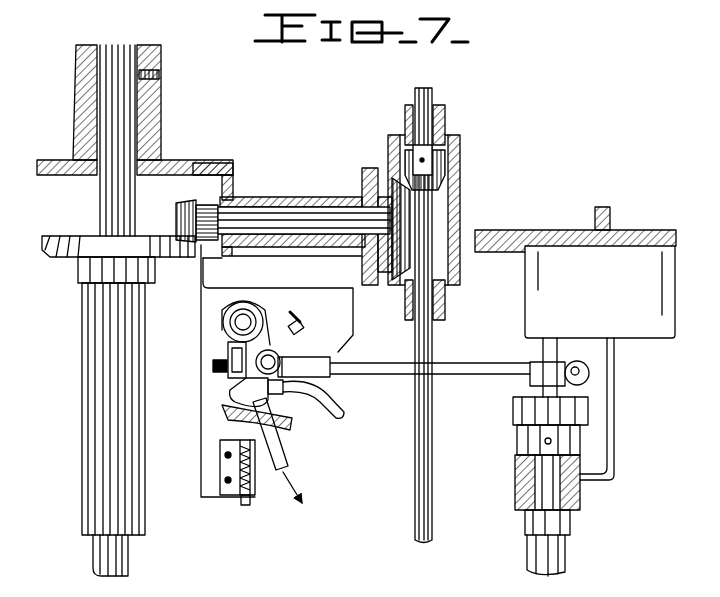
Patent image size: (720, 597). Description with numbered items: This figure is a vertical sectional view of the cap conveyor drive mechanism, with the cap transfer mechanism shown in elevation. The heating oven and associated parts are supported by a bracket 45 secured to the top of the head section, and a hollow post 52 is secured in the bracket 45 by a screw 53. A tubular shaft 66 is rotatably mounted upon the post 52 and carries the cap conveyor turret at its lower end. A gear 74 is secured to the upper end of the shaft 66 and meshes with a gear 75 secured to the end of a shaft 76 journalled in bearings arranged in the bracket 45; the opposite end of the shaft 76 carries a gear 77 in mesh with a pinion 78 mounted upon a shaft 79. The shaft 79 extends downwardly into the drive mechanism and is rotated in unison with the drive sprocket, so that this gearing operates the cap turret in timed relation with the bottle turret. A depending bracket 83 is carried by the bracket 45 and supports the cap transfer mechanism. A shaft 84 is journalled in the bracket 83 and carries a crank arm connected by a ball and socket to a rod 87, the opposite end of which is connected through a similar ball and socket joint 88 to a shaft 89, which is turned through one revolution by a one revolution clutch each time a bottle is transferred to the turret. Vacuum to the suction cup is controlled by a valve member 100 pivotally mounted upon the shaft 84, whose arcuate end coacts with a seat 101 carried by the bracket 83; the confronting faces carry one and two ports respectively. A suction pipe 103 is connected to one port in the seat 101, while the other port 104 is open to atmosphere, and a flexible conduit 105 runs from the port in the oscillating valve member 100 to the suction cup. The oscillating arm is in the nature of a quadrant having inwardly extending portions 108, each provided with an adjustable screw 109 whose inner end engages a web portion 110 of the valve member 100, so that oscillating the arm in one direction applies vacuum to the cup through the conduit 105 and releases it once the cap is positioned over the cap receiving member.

The bracket 45 is at (163, 130).
The hollow post 52 is at (97, 548).
The screw 53 is at (161, 75).
The tubular shaft 66 is at (97, 420).
The gear 74 is at (42, 250).
The gear 75 is at (188, 205).
The shaft 76 is at (282, 208).
The gear 77 is at (406, 245).
The pinion 78 is at (446, 178).
The shaft 79 is at (433, 100).
The depending bracket 83 is at (352, 312).
The shaft 84 is at (240, 322).
The rod 87 is at (468, 365).
The ball and socket joint 88 is at (590, 373).
The shaft 89 is at (564, 554).
The valve member 100 is at (238, 395).
The seat 101 is at (292, 420).
The suction pipe 103 is at (286, 456).
The port 104 is at (230, 428).
The flexible conduit 105 is at (340, 412).
The inwardly extending portions 108 is at (230, 348).
The adjustable screw 109 is at (213, 365).
The web portion 110 is at (226, 345).